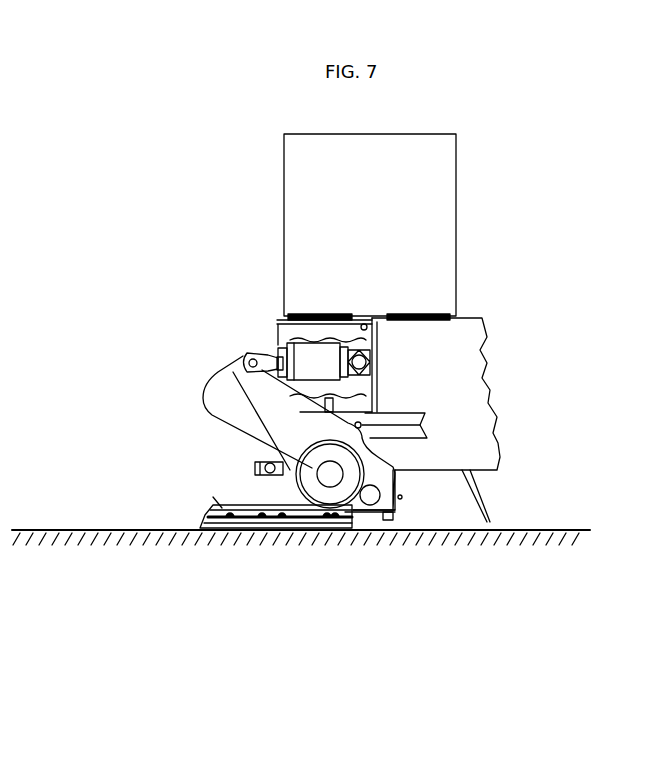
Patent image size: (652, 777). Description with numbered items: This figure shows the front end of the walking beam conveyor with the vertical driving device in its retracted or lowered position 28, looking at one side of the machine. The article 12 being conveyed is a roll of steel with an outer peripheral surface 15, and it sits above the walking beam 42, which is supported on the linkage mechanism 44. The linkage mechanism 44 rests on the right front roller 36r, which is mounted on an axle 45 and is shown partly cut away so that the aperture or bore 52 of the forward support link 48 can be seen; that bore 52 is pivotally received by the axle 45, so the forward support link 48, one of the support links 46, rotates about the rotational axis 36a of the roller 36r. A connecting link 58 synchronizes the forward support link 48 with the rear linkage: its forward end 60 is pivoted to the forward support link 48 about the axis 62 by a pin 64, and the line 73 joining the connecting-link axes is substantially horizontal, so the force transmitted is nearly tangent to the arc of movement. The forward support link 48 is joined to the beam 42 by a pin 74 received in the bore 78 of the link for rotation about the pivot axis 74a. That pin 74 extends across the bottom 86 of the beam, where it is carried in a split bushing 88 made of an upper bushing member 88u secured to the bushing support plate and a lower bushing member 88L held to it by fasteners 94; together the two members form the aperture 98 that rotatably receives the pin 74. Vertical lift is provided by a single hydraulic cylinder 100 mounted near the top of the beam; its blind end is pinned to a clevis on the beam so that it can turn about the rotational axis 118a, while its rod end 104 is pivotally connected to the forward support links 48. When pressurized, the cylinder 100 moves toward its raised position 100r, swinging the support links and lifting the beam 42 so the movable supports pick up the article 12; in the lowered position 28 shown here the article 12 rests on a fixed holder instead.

The article 12 is at (284, 153).
The outer peripheral surface 15 is at (318, 210).
The retracted or lowered position 28 is at (113, 353).
The rotational axis of roller 36a is at (350, 527).
The right front roller 36r is at (313, 500).
The walking beam 42 is at (455, 375).
The linkage mechanism 44 is at (165, 388).
The axle 45 is at (330, 480).
The support link 46 is at (223, 397).
The forward support link 48 is at (258, 410).
The aperture or bore 52 is at (213, 497).
The connecting link 58 is at (487, 347).
The forward end of connecting link 60 is at (488, 385).
The pivot point or axis 62 is at (368, 360).
The pin 64 is at (320, 367).
The line connecting the axes 73 is at (423, 425).
The pin 74 is at (420, 473).
The rotational axis or pivot point of pin 74a is at (400, 512).
The aperture or bore 78 is at (425, 413).
The bottom of the beam 86 is at (487, 522).
The split bushing 88 is at (400, 497).
The upper bushing member 88u is at (398, 483).
The lower bushing member 88L is at (398, 506).
The fastener 94 is at (390, 518).
The aperture 98 is at (404, 553).
The hydraulic cylinder 100 is at (357, 422).
The raised position of cylinder 100r is at (246, 319).
The rod end 104 is at (250, 366).
The rotational axis of pin 118a is at (248, 360).